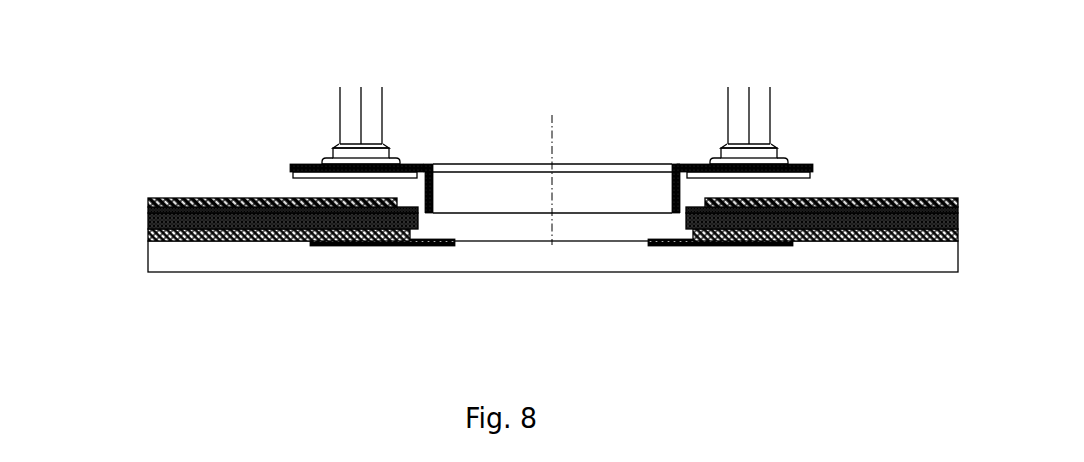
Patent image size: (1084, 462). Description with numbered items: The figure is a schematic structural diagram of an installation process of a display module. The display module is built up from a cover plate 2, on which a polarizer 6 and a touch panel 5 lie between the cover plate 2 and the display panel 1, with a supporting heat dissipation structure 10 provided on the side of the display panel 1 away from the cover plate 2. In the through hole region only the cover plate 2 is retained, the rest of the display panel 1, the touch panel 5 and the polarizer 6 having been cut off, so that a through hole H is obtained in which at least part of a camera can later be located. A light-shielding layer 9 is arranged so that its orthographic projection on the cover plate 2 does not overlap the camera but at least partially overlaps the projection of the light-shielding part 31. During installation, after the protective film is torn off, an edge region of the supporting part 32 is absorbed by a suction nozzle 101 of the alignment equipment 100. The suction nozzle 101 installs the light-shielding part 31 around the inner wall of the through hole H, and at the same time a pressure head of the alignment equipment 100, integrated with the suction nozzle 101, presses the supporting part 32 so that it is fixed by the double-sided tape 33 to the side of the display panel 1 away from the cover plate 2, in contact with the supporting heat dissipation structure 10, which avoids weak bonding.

The alignment equipment 100 is at (360, 80).
The suction nozzle 101 is at (397, 160).
The supporting part 32 is at (303, 164).
The double-sided tape 33 is at (303, 176).
The light-shielding part 31 is at (433, 192).
The supporting heat dissipation structure 10 is at (147, 200).
The display panel 1 is at (147, 209).
The touch panel 5 is at (147, 219).
The polarizer 6 is at (147, 236).
The cover plate 2 is at (147, 258).
The light-shielding layer 9 is at (360, 246).
The through hole H is at (580, 225).